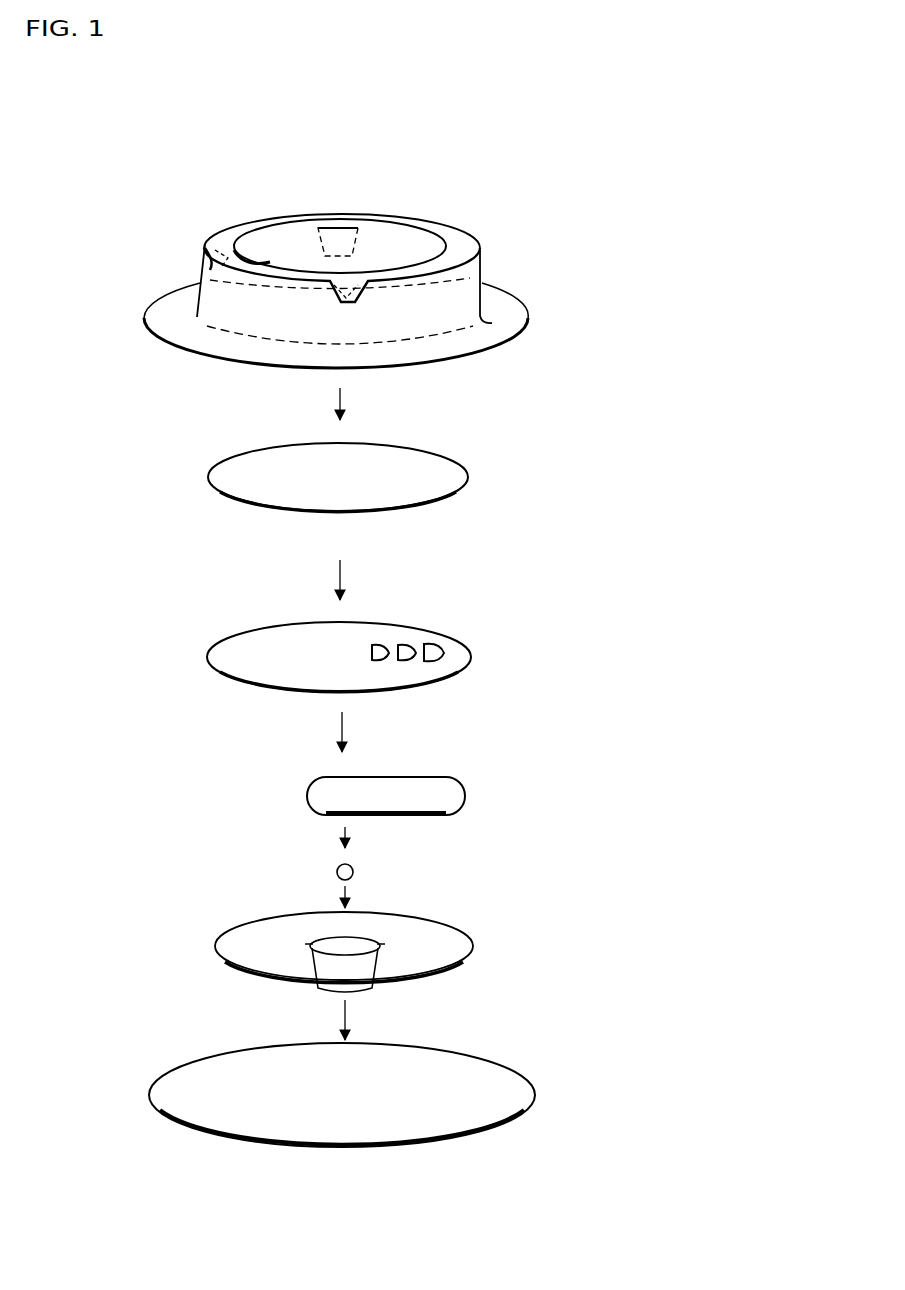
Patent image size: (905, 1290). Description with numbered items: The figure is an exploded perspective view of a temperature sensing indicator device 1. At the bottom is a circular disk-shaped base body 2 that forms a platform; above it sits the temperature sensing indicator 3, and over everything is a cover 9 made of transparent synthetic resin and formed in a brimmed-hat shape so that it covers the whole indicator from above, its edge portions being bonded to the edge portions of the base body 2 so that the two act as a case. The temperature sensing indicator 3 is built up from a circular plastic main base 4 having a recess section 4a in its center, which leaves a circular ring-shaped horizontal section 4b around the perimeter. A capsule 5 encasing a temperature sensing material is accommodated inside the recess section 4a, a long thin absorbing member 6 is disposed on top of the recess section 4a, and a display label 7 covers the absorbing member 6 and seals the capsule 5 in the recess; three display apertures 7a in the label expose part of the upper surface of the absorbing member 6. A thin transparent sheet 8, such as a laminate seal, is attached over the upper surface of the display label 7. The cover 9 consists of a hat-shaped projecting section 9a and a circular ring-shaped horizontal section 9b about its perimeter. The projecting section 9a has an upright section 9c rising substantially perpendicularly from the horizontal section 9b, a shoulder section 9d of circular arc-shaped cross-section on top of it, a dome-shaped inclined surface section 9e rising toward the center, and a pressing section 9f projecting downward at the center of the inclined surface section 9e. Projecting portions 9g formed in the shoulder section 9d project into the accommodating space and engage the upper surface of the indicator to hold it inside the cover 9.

The temperature sensing indicator device 1 is at (652, 451).
The base body 2 is at (520, 1091).
The temperature sensing indicator 3 is at (180, 972).
The main base 4 is at (244, 925).
The recess section 4a is at (356, 950).
The horizontal section 4b is at (455, 948).
The capsule 5 is at (336, 872).
The absorbing member 6 is at (326, 793).
The display label 7 is at (268, 672).
The display apertures 7a is at (436, 644).
The transparent sheet 8 is at (230, 462).
The cover 9 is at (510, 248).
The projecting section 9a is at (434, 220).
The horizontal section 9b is at (520, 326).
The upright section 9c is at (208, 310).
The shoulder section 9d is at (241, 240).
The inclined surface section 9e is at (287, 244).
The pressing section 9f is at (342, 228).
The projecting portions 9g is at (208, 244).